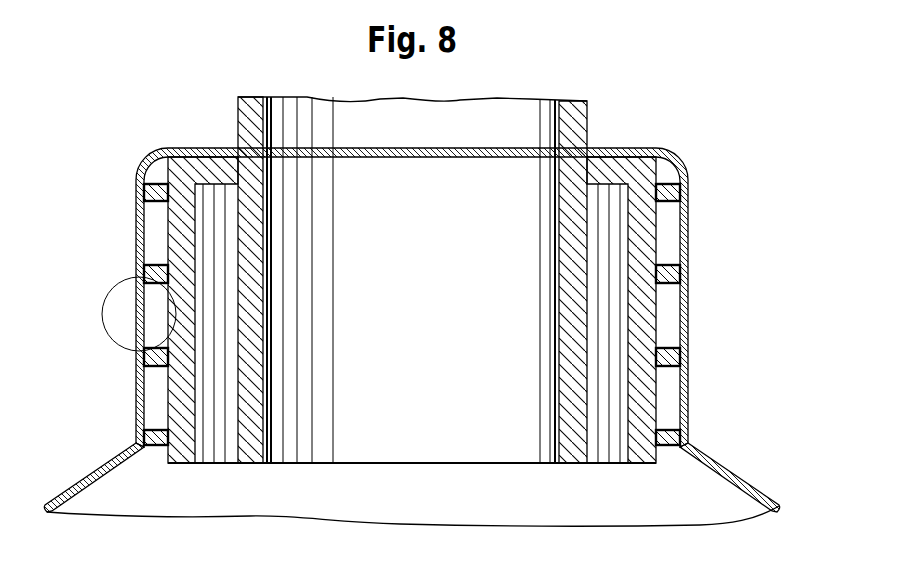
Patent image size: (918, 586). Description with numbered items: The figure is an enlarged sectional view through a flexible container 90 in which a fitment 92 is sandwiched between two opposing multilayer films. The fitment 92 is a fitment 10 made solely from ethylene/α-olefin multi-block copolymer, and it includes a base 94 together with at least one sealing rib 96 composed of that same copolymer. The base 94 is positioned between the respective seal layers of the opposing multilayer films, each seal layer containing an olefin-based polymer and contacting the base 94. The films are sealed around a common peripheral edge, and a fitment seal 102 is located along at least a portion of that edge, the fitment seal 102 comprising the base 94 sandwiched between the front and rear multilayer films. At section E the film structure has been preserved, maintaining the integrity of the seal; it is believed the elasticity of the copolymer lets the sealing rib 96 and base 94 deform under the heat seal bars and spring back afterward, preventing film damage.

The flexible container 90 is at (692, 80).
The fitment 92 is at (688, 145).
The base 94 is at (215, 148).
The sealing rib 96 is at (683, 192).
The fitment seal 102 is at (110, 224).
The fitment 10 is at (588, 120).
The section E is at (102, 318).